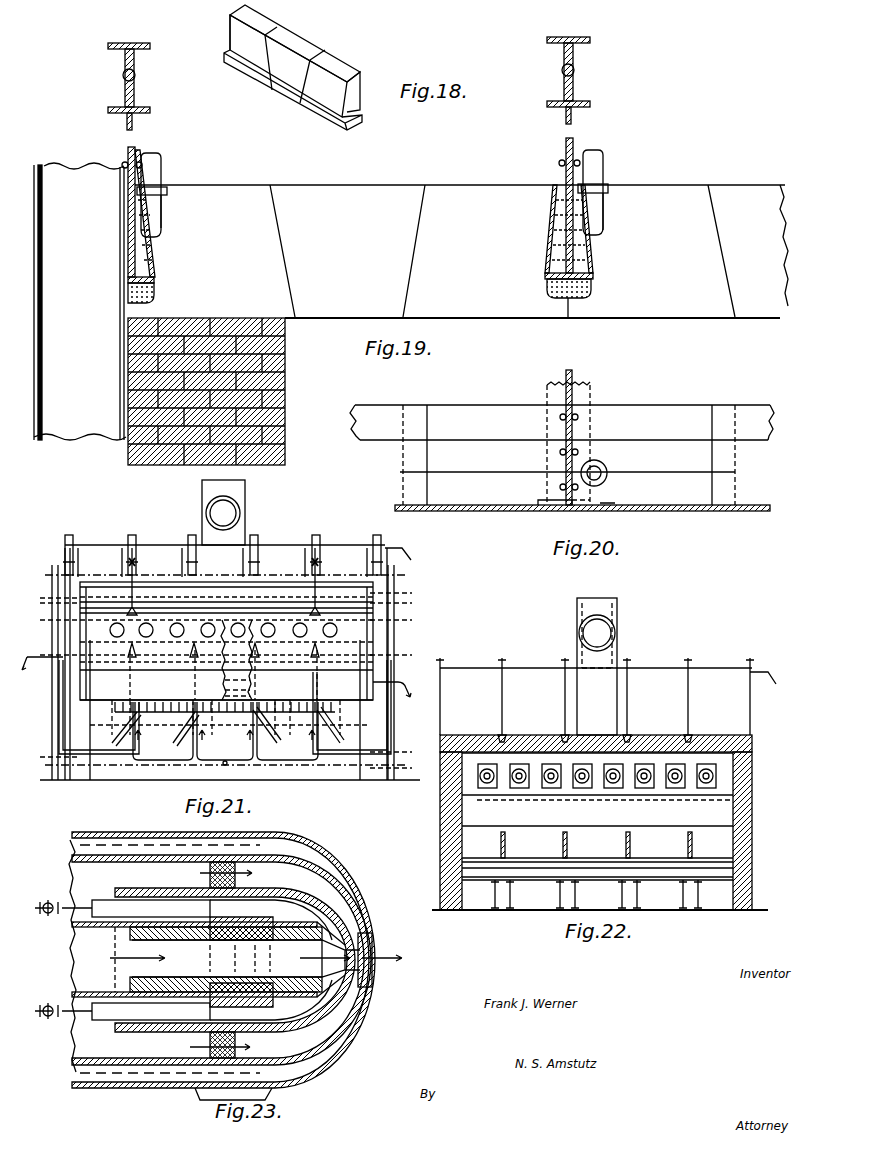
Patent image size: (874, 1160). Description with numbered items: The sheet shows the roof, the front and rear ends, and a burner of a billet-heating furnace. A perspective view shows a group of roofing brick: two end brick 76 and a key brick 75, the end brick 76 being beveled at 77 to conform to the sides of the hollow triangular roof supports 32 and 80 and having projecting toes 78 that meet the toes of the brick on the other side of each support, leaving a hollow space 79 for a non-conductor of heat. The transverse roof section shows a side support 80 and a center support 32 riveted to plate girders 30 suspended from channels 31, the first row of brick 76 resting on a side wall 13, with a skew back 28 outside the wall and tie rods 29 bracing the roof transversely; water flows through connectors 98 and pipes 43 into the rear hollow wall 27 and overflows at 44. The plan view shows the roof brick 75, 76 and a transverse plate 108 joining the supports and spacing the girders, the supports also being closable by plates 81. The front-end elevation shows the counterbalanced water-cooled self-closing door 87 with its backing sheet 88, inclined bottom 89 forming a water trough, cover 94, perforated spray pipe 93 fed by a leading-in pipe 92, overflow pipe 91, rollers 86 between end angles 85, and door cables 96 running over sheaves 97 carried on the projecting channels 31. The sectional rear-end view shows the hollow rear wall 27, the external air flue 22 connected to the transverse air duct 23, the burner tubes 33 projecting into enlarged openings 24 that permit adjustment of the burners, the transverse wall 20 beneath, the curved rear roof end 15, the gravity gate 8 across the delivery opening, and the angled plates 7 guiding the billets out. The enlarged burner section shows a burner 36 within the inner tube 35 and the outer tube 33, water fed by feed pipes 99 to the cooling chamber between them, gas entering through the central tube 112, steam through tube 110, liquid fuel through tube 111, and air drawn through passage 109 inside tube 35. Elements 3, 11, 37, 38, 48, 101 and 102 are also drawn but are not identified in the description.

In FIG. 21, the nozzle tubes 3 is at (152, 666).
In FIG. 22, the plates 7 is at (506, 843).
In FIG. 22, the self-closing gravity gate 8 is at (606, 836).
In FIG. 22, the grate plate 11 is at (529, 858).
In FIG. 19, the side walls 13 is at (285, 390).
In FIG. 22, the side walls 13 is at (444, 801).
In FIG. 22, the rear end of furnace roof 15 is at (535, 742).
In FIG. 22, the transverse wall 20 is at (593, 793).
In FIG. 21, the external air flue 22 is at (242, 512).
In FIG. 22, the external air flue 22 is at (614, 622).
In FIG. 22, the transverse air duct 23 is at (528, 778).
In FIG. 22, the enlarged openings 24 is at (484, 790).
In FIG. 21, the hollow rear wall 27 is at (280, 552).
In FIG. 22, the hollow rear wall 27 is at (528, 676).
In FIG. 19, the skew backs 28 is at (44, 372).
In FIG. 21, the skew backs 28 is at (60, 596).
In FIG. 21, the tie rods 29 is at (58, 576).
In FIG. 18, the plate girders 30 is at (132, 124).
In FIG. 20, the plate girders 30 is at (573, 376).
In FIG. 22, the plate girders 30 is at (441, 704).
In FIG. 18, the channels 31 is at (135, 43).
In FIG. 19, the channels 31 is at (351, 207).
In FIG. 21, the channels 31 is at (70, 535).
In FIG. 22, the channels 31 is at (597, 686).
In FIG. 19, the hollow triangular roof supports 32 is at (552, 246).
In FIG. 20, the hollow triangular roof supports 32 is at (548, 386).
In FIG. 21, the hollow triangular roof supports 32 is at (137, 646).
In FIG. 22, the hollow triangular roof supports 32 is at (500, 738).
In FIG. 22, the burner tubes 33 is at (478, 776).
In FIG. 23, the burner tubes 33 is at (156, 832).
In FIG. 23, the inner tubes 35 is at (105, 862).
In FIG. 23, the fuel burners 36 is at (148, 890).
In FIG. 21, the bin 37 is at (133, 758).
In FIG. 21, the chute 38 is at (230, 726).
In FIG. 19, the pipes 43 is at (161, 173).
In FIG. 20, the pipes 43 is at (605, 468).
In FIG. 21, the pipes 43 is at (80, 560).
In FIG. 22, the pipes 43 is at (441, 678).
In FIG. 21, the overflow 44 is at (405, 548).
In FIG. 22, the overflow 44 is at (768, 672).
In FIG. 21, the pipe 48 is at (59, 727).
In FIG. 18, the key brick 75 is at (318, 42).
In FIG. 19, the key brick 75 is at (370, 188).
In FIG. 20, the key brick 75 is at (390, 410).
In FIG. 18, the end brick 76 is at (251, 70).
In FIG. 19, the end brick 76 is at (240, 188).
In FIG. 20, the end brick 76 is at (477, 410).
In FIG. 18, the bevel 77 is at (232, 33).
In FIG. 18, the projecting toes 78 is at (225, 63).
In FIG. 19, the projecting toes 78 is at (561, 310).
In FIG. 19, the hollow space 79 is at (592, 284).
In FIG. 19, the hollow triangular side roof supports 80 is at (150, 268).
In FIG. 22, the hollow triangular side roof supports 80 is at (445, 742).
In FIG. 20, the plates 81 is at (534, 503).
In FIG. 21, the end angles 85 is at (80, 612).
In FIG. 21, the rollers 86 is at (226, 641).
In FIG. 21, the self-closing door 87 is at (373, 660).
In FIG. 21, the backing sheet 88 is at (232, 622).
In FIG. 21, the inclined bottom 89 is at (226, 691).
In FIG. 21, the overflow pipe 91 is at (396, 685).
In FIG. 21, the leading-in pipe 92 is at (42, 655).
In FIG. 21, the perforated pipe 93 is at (230, 658).
In FIG. 21, the cover 94 is at (237, 678).
In FIG. 21, the door cables 96 is at (132, 596).
In FIG. 21, the sheaves 97 is at (134, 563).
In FIG. 19, the connectors 98 is at (161, 214).
In FIG. 20, the connectors 98 is at (606, 481).
In FIG. 23, the feed pipes 99 is at (272, 1092).
In FIG. 22, the beams 101 is at (575, 895).
In FIG. 22, the floor 102 is at (470, 870).
In FIG. 20, the transverse plate 108 is at (476, 512).
In FIG. 23, the air passage 109 is at (200, 960).
In FIG. 23, the steam tube 110 is at (92, 1008).
In FIG. 23, the liquid fuel tube 111 is at (62, 910).
In FIG. 23, the central gas tube 112 is at (95, 950).